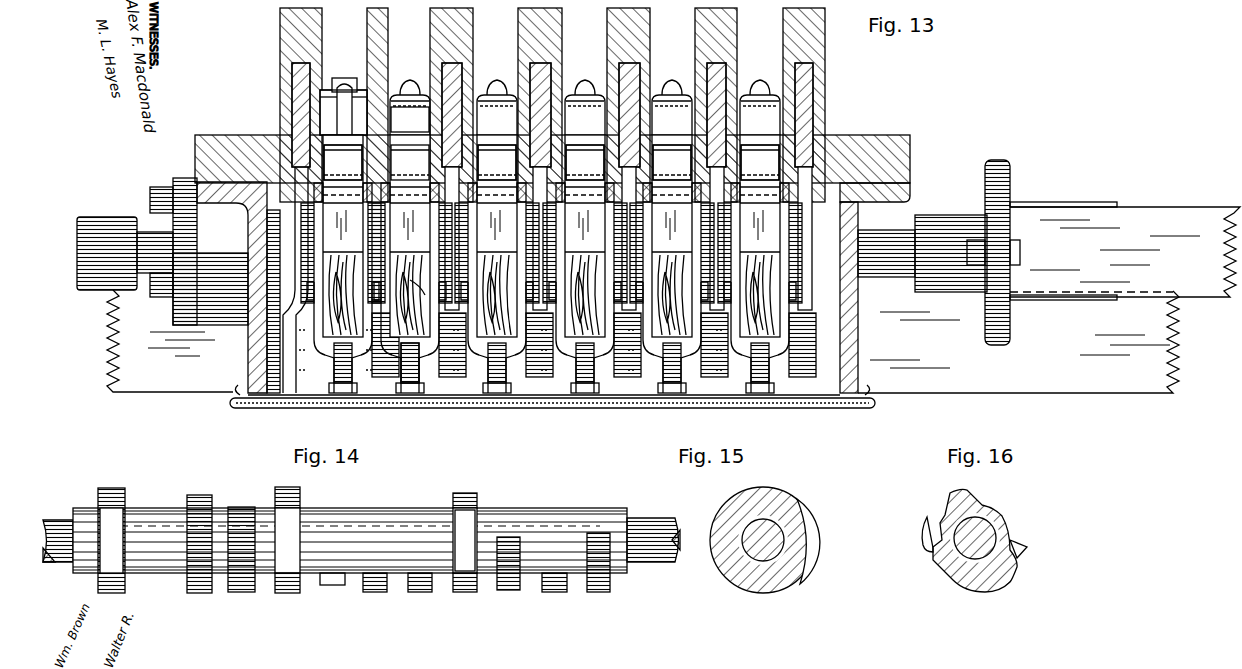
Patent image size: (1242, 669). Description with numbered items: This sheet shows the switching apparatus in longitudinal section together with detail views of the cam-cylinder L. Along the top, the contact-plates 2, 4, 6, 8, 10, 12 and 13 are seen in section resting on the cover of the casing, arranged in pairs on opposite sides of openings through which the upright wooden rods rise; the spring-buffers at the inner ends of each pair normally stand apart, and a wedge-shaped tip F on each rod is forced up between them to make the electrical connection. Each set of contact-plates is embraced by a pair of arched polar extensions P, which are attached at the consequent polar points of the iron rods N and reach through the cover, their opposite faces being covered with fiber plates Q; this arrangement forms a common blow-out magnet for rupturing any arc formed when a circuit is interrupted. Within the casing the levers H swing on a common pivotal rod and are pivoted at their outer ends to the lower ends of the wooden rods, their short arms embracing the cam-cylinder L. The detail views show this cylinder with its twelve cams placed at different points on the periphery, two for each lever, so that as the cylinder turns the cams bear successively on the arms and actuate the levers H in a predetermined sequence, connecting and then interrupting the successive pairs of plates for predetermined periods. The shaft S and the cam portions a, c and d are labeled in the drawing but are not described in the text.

In FIG. 13, the fiber plates Q is at (280, 30).
In FIG. 13, the arched polar extensions P is at (292, 86).
In FIG. 13, the contact-plate 13 is at (349, 235).
In FIG. 13, the contact-plate 12 is at (343, 112).
In FIG. 13, the contact-plate 10 is at (411, 90).
In FIG. 13, the contact-plate 8 is at (495, 90).
In FIG. 13, the contact-plate 6 is at (583, 90).
In FIG. 13, the contact-plate 4 is at (670, 90).
In FIG. 13, the contact-plate 2 is at (758, 90).
In FIG. 13, the wedge-shaped tip F is at (551, 143).
In FIG. 13, the iron rods N is at (325, 303).
In FIG. 13, the levers H is at (405, 374).
In FIG. 13, the shaft S is at (1100, 251).
In FIG. 14, the cam-cylinder L is at (523, 508).
In FIG. 14, the collar a is at (112, 600).
In FIG. 14, the cam c is at (465, 493).
In FIG. 14, the cam lobe d is at (465, 592).